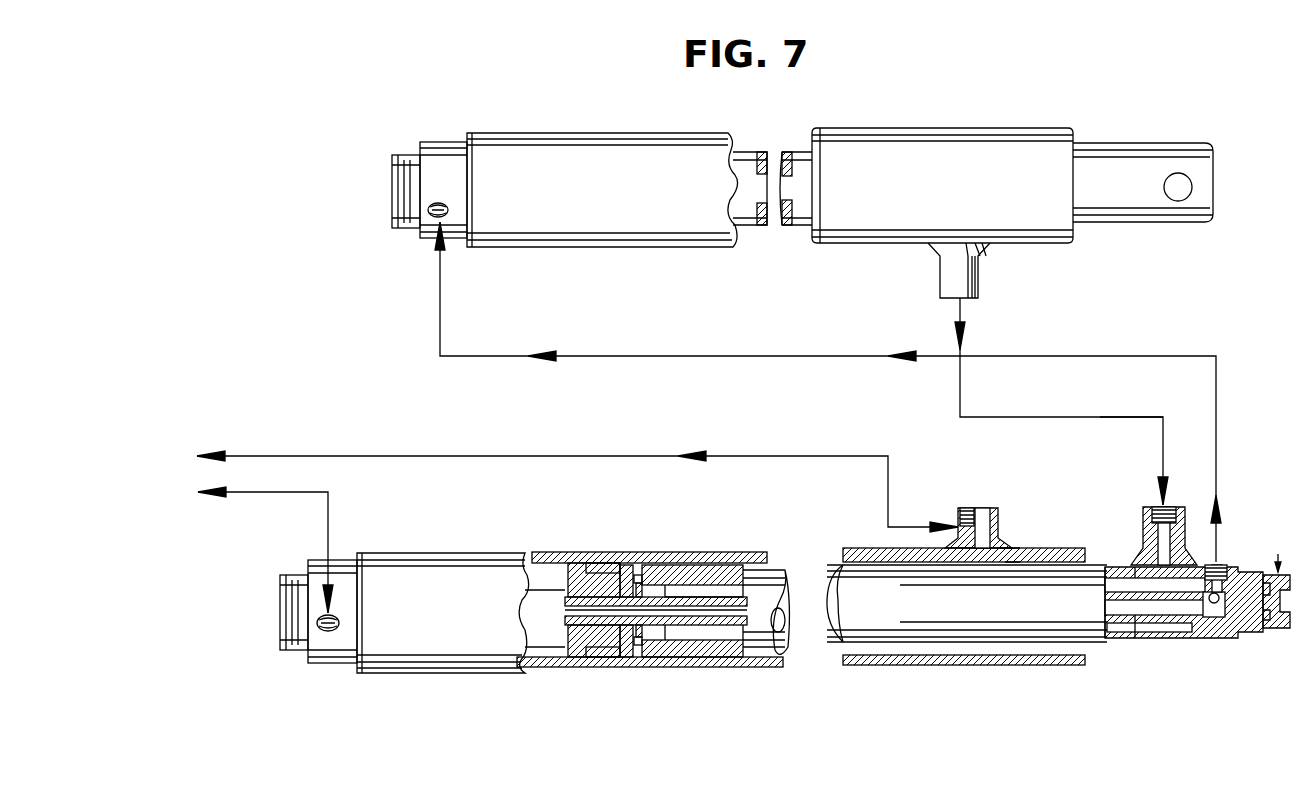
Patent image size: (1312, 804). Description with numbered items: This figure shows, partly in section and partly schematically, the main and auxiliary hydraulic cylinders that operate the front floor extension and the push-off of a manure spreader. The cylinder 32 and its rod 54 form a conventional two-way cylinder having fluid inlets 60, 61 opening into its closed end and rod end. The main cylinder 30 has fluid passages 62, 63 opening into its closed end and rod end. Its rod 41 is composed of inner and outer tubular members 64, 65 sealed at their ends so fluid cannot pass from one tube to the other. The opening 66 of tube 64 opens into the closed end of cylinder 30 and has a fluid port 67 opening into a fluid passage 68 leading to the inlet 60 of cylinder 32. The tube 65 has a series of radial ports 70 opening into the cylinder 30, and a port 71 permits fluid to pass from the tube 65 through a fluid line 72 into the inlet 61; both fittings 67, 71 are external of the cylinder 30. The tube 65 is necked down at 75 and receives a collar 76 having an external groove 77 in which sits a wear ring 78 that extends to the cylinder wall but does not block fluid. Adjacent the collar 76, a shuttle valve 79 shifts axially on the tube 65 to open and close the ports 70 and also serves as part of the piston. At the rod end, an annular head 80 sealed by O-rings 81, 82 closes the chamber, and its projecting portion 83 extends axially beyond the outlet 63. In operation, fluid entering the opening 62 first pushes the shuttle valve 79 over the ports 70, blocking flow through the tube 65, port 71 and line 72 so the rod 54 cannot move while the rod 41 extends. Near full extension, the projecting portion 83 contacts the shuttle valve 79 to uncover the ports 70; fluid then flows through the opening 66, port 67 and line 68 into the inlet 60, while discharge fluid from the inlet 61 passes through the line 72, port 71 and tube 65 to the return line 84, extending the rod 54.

The main cylinder 30 is at (438, 635).
The cylinder 32 is at (652, 215).
The rod 41 is at (1252, 562).
The rod 54 is at (1130, 170).
The fluid inlet 60 is at (448, 206).
The fluid inlet 61 is at (978, 275).
The fluid passage 62 is at (332, 633).
The fluid passage 63 is at (962, 520).
The inner tubular member 64 is at (1148, 622).
The outer tubular member 65 is at (1128, 645).
The opening 66 is at (1182, 600).
The fluid port 67 is at (1222, 562).
The fluid passage 68 is at (1217, 375).
The radial ports 70 is at (650, 578).
The port 71 is at (1160, 507).
The fluid line 72 is at (1105, 417).
The necked down portion 75 is at (606, 590).
The collar 76 is at (610, 655).
The external groove 77 is at (572, 655).
The wear ring 78 is at (598, 656).
The shuttle valve 79 is at (645, 648).
The head 80 is at (1060, 548).
The O-ring 81 is at (1042, 566).
The O-ring 82 is at (1015, 546).
The projecting portion 83 is at (995, 566).
The return line 84 is at (575, 456).